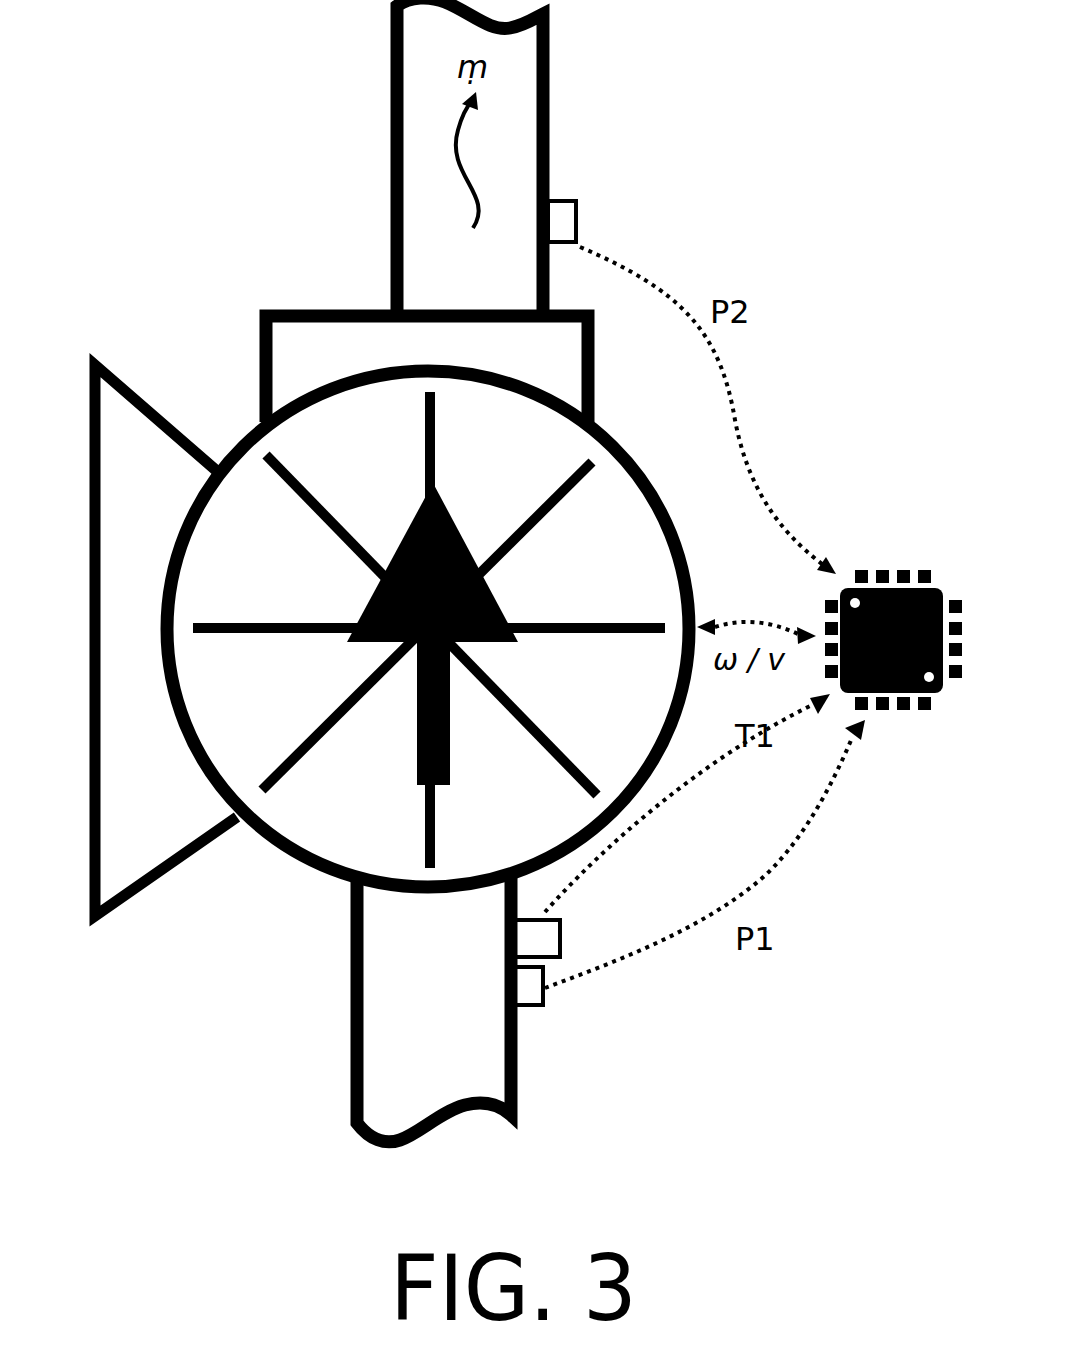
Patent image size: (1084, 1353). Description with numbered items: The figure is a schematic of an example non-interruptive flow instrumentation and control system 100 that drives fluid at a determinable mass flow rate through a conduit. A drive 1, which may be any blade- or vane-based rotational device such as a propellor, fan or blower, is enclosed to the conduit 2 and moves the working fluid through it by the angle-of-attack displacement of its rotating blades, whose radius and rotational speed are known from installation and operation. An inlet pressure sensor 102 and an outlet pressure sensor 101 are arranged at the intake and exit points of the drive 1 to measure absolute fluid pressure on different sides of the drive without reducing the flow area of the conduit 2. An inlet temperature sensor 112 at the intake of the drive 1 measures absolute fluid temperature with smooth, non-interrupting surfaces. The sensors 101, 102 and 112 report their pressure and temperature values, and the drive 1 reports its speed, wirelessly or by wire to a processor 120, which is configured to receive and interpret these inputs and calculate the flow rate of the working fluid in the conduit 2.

The non-interruptive flow instrumentation and control system 100 is at (101, 107).
The drive 1 is at (663, 503).
The conduit 2 is at (391, 200).
The outlet pressure sensor 101 is at (577, 235).
The inlet pressure sensor 102 is at (543, 998).
The inlet temperature sensor 112 is at (560, 932).
The processor 120 is at (937, 587).